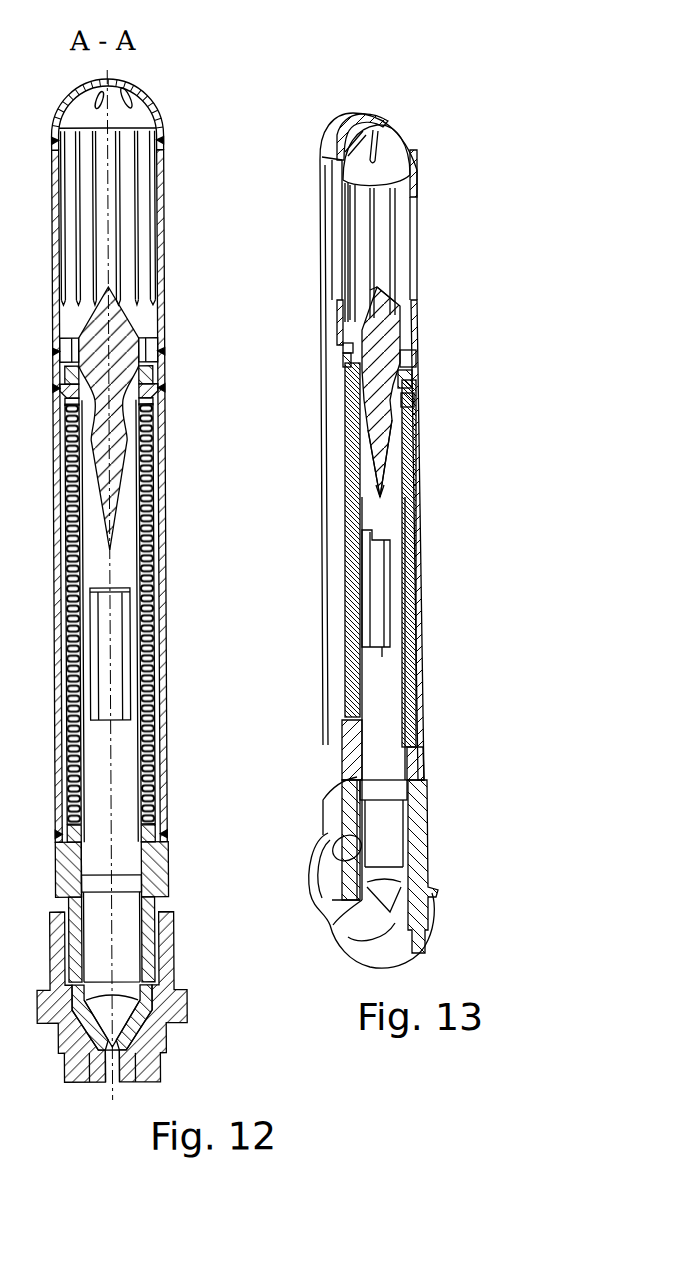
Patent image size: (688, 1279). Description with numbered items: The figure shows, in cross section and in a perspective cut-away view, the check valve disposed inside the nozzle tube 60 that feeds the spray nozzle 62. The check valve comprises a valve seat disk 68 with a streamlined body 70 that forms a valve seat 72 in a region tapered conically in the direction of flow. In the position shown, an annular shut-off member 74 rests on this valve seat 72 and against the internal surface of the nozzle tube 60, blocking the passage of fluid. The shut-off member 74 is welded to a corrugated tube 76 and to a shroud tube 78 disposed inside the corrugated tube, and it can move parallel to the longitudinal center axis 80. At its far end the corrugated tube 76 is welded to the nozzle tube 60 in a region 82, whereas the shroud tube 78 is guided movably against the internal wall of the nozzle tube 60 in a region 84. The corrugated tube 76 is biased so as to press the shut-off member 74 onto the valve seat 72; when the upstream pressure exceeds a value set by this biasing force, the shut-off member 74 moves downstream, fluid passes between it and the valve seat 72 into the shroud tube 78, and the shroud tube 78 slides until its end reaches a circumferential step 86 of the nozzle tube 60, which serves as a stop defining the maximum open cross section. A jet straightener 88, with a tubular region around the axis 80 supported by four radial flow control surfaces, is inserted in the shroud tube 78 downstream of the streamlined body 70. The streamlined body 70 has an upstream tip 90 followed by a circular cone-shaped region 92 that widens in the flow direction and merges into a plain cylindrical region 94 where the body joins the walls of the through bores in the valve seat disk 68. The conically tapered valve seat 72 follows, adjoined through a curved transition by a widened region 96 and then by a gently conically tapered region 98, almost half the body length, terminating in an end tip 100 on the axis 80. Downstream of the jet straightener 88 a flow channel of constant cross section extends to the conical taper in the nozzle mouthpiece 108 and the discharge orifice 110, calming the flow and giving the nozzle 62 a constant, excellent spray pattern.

In FIG. 12, the nozzle tube 60 is at (180, 461).
In FIG. 12, the spray nozzle 62 is at (195, 947).
In FIG. 12, the valve seat disk 68 is at (150, 342).
In FIG. 12, the streamlined body 70 is at (127, 320).
In FIG. 13, the streamlined body 70 is at (390, 330).
In FIG. 12, the valve seat 72 is at (137, 367).
In FIG. 13, the valve seat 72 is at (395, 370).
In FIG. 12, the annular shut-off member 74 is at (128, 380).
In FIG. 12, the corrugated tube 76 is at (157, 597).
In FIG. 12, the shroud tube 78 is at (130, 557).
In FIG. 12, the longitudinal center axis 80 is at (117, 900).
In FIG. 12, the region 82 is at (158, 827).
In FIG. 12, the region 84 is at (160, 858).
In FIG. 12, the circumferential step 86 is at (82, 883).
In FIG. 12, the jet straightener 88 is at (112, 683).
In FIG. 13, the tip 90 is at (370, 292).
In FIG. 13, the circular cone-shaped region 92 is at (385, 300).
In FIG. 13, the region 94 is at (400, 353).
In FIG. 13, the widened region 96 is at (390, 392).
In FIG. 13, the conically tapered region 98 is at (385, 458).
In FIG. 13, the end tip 100 is at (378, 495).
In FIG. 12, the nozzle mouthpiece 108 is at (143, 1037).
In FIG. 12, the discharge orifice 110 is at (113, 1057).